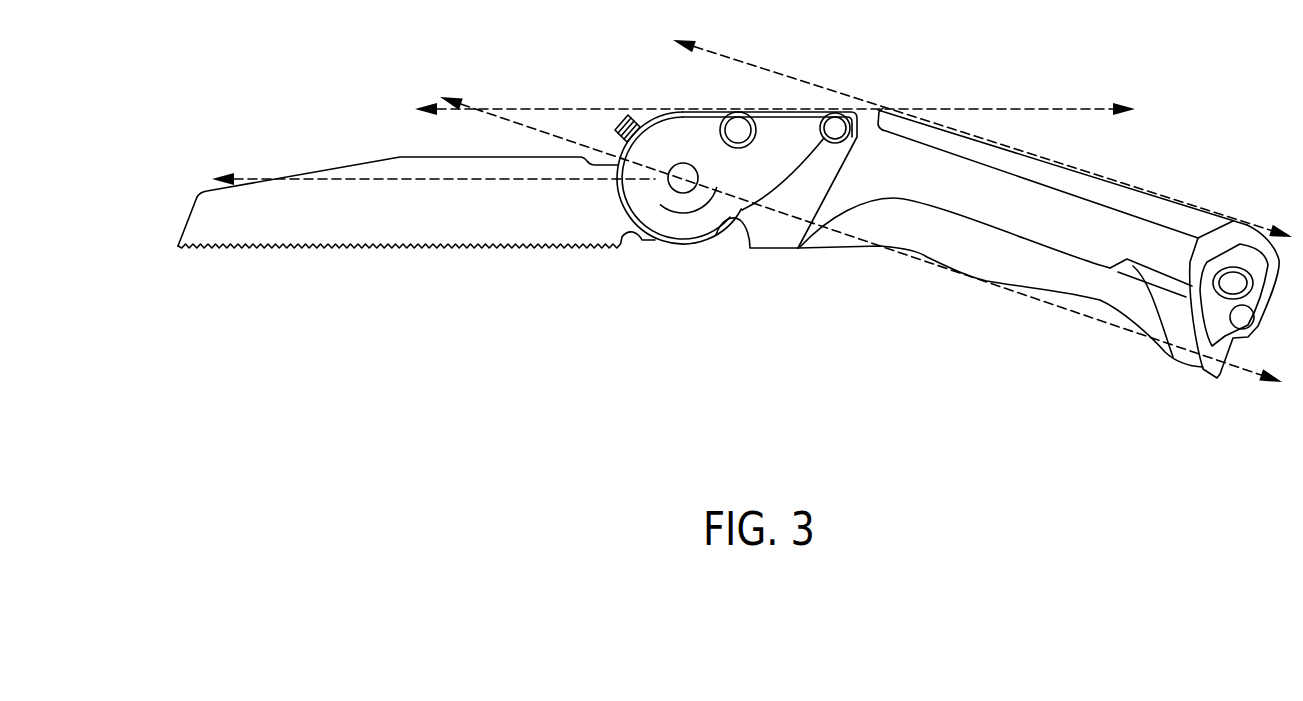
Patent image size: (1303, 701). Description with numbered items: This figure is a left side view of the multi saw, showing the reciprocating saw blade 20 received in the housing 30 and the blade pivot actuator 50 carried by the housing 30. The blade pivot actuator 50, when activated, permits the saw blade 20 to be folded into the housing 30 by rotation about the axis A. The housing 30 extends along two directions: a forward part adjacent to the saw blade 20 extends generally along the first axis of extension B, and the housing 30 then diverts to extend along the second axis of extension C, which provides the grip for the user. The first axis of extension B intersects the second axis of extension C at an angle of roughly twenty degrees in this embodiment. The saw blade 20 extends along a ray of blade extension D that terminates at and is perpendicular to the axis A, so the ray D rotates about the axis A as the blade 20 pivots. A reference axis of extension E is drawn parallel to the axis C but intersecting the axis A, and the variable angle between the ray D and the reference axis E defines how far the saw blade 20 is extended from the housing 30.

The reciprocating saw blade 20 is at (528, 218).
The housing 30 is at (767, 240).
The blade pivot actuator 50 is at (745, 164).
The axis A is at (688, 192).
The first axis of extension B is at (1008, 109).
The second axis of extension C is at (755, 62).
The ray of blade extension D is at (270, 179).
The reference axis of extension E is at (1245, 370).